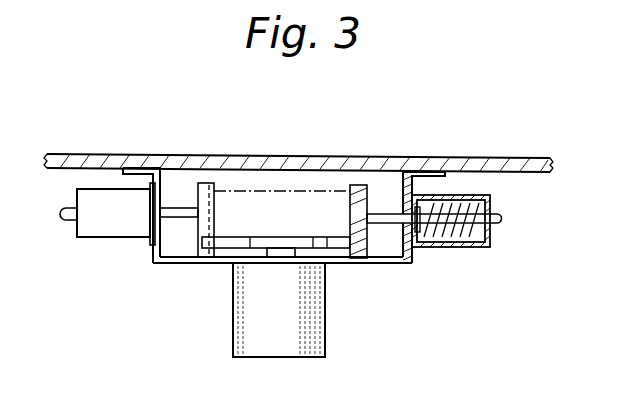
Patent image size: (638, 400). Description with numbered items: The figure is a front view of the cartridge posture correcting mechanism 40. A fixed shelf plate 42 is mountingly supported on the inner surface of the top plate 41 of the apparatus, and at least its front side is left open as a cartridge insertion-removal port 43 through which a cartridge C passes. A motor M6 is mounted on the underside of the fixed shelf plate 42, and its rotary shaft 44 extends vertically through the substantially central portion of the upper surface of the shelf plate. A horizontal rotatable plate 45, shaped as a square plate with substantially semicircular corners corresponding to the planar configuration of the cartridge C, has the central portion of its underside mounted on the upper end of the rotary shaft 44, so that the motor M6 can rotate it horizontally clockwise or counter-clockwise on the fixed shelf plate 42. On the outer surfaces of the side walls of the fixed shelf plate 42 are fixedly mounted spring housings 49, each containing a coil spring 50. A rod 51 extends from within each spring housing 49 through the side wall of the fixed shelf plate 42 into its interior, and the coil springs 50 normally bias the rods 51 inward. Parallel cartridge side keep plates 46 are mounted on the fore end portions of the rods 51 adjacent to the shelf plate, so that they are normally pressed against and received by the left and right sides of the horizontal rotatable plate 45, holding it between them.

The cartridge posture correcting mechanism 40 is at (177, 270).
The top plate 41 is at (383, 215).
The fixed shelf plate 42 is at (345, 263).
The cartridge insertion-removal port 43 is at (322, 178).
The rotary shaft 44 is at (282, 260).
The horizontal rotatable plate 45 is at (272, 245).
The cartridge side keep plates 46 is at (217, 212).
The spring housings 49 is at (107, 227).
The coil springs 50 is at (470, 208).
The rod 51 is at (175, 210).
The cartridge C is at (265, 193).
The motor M6 is at (315, 335).